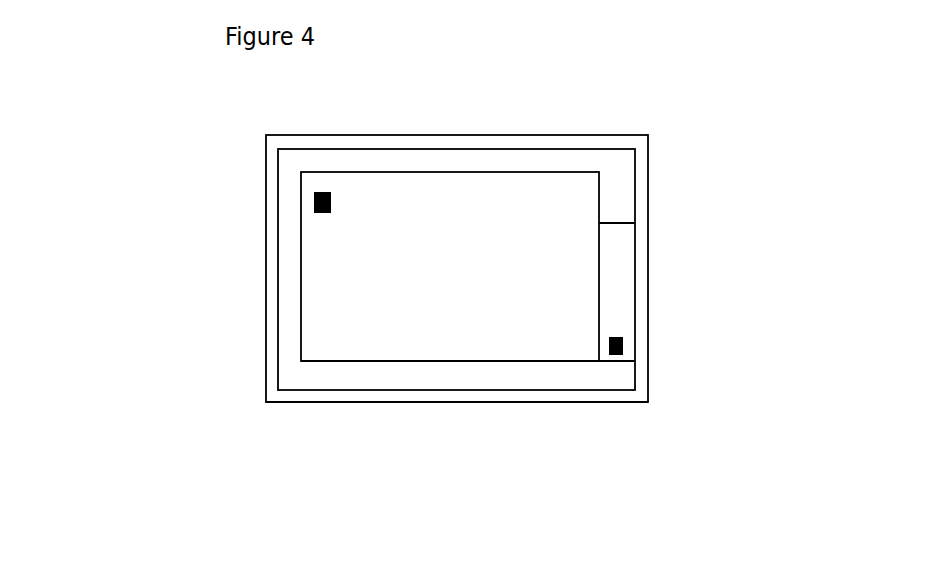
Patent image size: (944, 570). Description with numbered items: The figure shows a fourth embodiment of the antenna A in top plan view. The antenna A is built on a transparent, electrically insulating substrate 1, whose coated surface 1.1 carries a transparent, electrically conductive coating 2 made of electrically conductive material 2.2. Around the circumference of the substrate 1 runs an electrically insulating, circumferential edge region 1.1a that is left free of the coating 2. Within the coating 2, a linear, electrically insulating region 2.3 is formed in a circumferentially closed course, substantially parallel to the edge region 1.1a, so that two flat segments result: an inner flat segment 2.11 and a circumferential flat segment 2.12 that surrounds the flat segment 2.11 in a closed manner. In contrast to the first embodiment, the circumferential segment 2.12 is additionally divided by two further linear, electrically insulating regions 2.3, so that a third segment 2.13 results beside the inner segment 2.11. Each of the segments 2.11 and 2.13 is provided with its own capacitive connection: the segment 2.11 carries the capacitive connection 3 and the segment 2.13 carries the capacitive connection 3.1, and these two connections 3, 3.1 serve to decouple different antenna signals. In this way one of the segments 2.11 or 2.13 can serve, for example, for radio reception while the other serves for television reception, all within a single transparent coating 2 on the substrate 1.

The antenna A is at (494, 129).
The transparent, electrically insulating substrate 1 is at (574, 406).
The coated surface of the transparent, electrically insulating substrate 1.1 is at (522, 457).
The electrically insulating, circumferential edge region 1.1a is at (506, 404).
The transparent, electrically conductive coating 2 is at (370, 269).
The electrically conductive material 2.2 is at (356, 310).
The flat segment 2.11 is at (329, 334).
The divided flat segment 2.12 is at (296, 372).
The flat segment 2.13 is at (614, 265).
The linear, electrically insulating region 2.3 is at (618, 220).
The capacitive connection 3 is at (313, 200).
The capacitive connection 3.1 is at (624, 349).